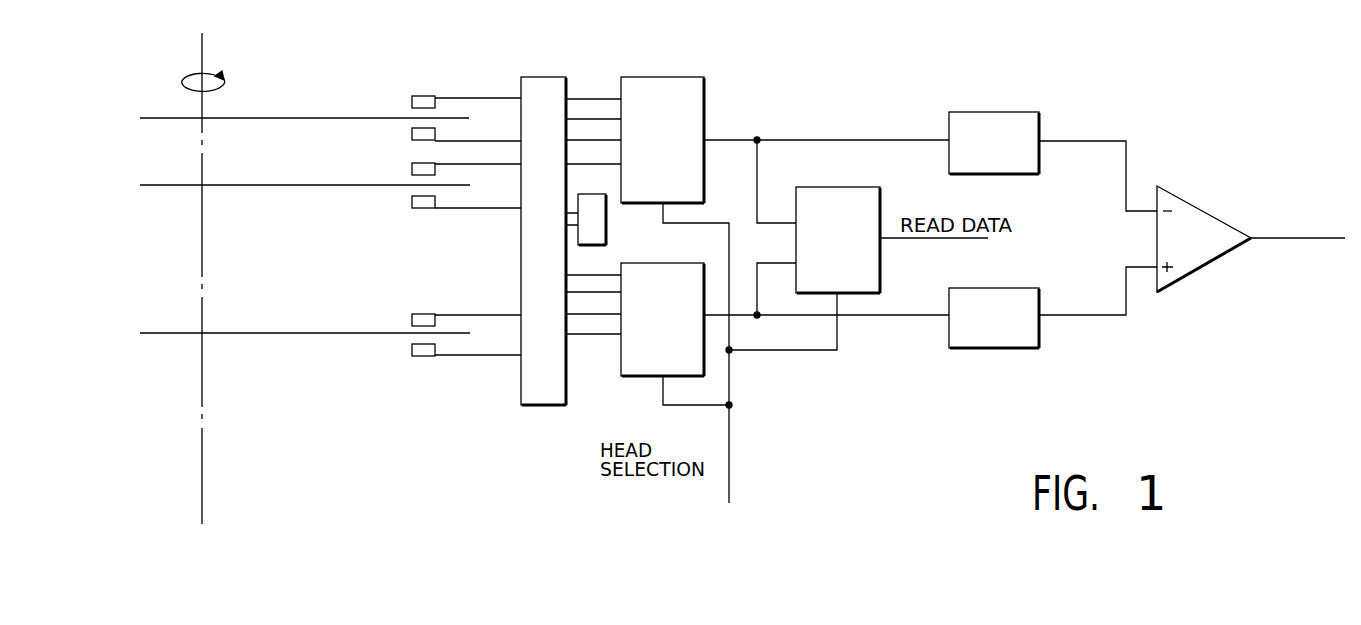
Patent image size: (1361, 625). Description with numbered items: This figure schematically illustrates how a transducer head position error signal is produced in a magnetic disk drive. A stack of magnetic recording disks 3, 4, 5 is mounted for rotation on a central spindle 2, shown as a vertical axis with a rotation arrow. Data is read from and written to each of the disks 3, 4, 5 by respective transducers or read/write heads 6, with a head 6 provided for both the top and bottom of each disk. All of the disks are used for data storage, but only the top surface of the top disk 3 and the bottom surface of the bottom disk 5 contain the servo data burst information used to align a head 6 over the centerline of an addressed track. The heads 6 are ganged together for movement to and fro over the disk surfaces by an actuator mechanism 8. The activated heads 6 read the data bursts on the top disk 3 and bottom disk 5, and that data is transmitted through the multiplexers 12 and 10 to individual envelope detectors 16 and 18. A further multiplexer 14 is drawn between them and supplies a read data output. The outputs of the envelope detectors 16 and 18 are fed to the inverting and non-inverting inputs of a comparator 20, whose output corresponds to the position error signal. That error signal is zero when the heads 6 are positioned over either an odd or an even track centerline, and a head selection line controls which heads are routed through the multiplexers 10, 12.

The central spindle 2 is at (205, 58).
The top disk 3 is at (293, 118).
The magnetic recording disk 4 is at (298, 185).
The bottom disk 5 is at (302, 333).
The read/write heads 6 is at (412, 100).
The actuator mechanism 8 is at (606, 221).
The multiplexer 10 is at (619, 364).
The multiplexer 12 is at (687, 77).
The multiplexer 14 is at (854, 187).
The envelope detector 16 is at (1013, 112).
The envelope detector 18 is at (1016, 288).
The comparator 20 is at (1191, 200).